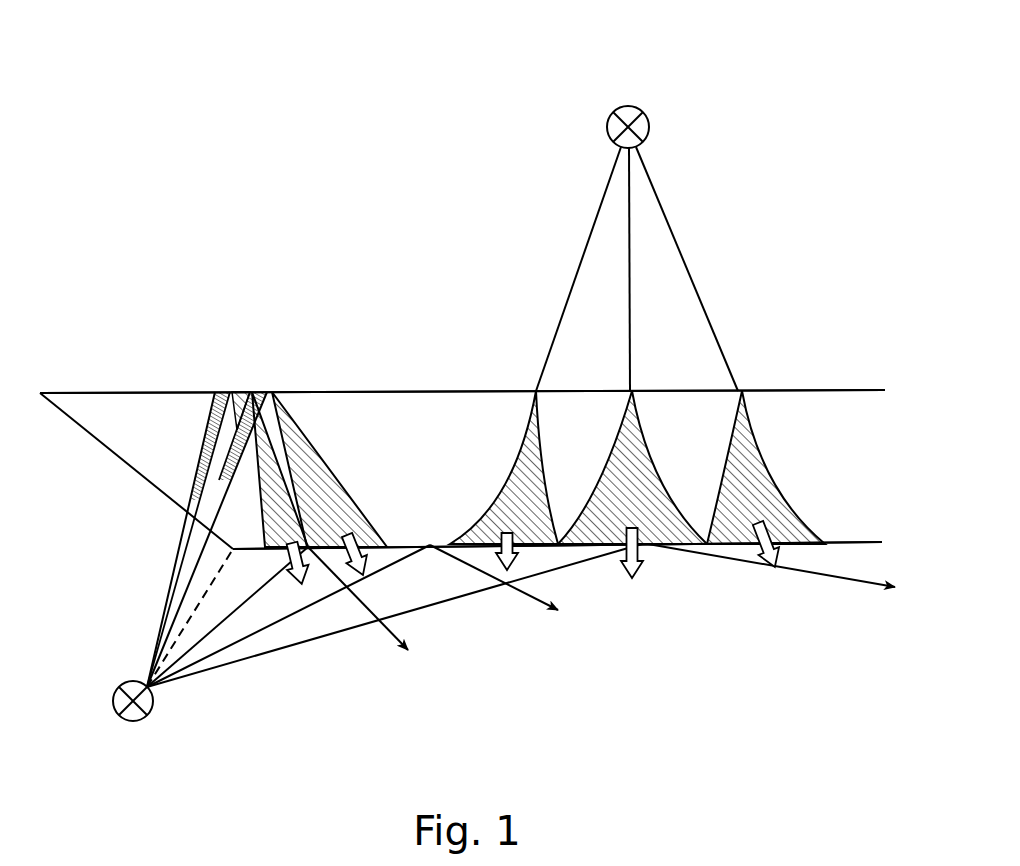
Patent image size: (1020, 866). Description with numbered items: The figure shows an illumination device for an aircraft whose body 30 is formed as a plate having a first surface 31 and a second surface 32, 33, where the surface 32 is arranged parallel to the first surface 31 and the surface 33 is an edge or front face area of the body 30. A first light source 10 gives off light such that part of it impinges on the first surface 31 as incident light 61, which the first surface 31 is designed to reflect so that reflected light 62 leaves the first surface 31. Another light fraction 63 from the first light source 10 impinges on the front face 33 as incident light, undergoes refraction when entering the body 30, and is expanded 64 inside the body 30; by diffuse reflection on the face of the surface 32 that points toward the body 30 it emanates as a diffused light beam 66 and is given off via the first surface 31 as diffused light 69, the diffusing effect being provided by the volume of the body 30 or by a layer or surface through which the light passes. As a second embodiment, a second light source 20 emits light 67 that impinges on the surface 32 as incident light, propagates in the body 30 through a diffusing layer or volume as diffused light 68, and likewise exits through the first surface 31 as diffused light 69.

The first light source 10 is at (113, 701).
The second light source 20 is at (627, 106).
The body 30 is at (425, 400).
The first surface 31 is at (858, 545).
The second surface 32 is at (860, 392).
The second surface 33 is at (128, 463).
The light 61 is at (270, 627).
The reflected light 62 is at (407, 652).
The light fraction 63 is at (183, 576).
The expanded light beams 64 is at (230, 477).
The diffused light beam 66 is at (273, 497).
The light of the second light source 67 is at (588, 228).
The diffused light 68 is at (513, 432).
The diffused light 69 is at (367, 563).